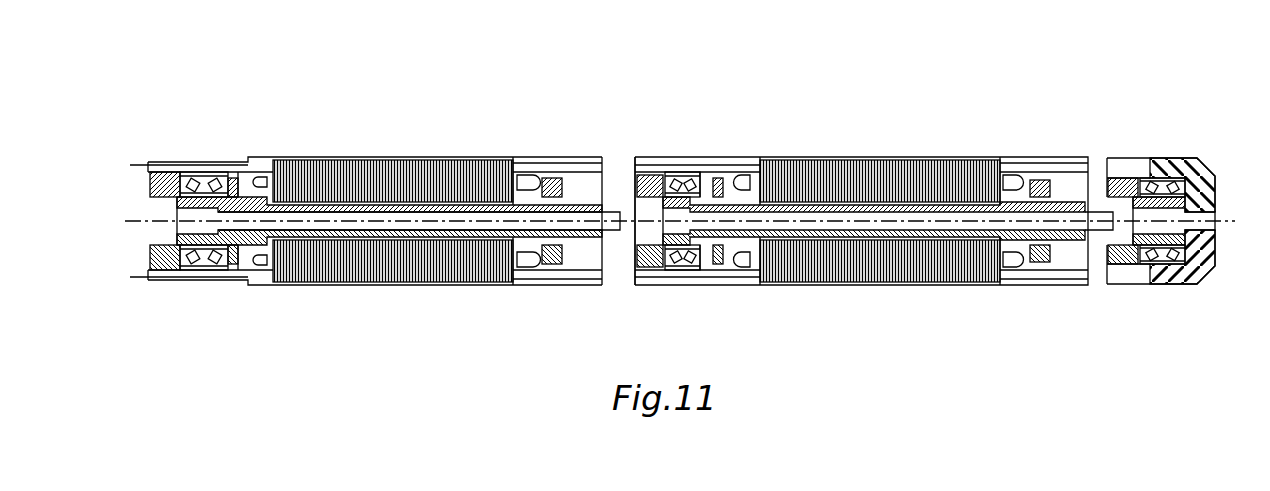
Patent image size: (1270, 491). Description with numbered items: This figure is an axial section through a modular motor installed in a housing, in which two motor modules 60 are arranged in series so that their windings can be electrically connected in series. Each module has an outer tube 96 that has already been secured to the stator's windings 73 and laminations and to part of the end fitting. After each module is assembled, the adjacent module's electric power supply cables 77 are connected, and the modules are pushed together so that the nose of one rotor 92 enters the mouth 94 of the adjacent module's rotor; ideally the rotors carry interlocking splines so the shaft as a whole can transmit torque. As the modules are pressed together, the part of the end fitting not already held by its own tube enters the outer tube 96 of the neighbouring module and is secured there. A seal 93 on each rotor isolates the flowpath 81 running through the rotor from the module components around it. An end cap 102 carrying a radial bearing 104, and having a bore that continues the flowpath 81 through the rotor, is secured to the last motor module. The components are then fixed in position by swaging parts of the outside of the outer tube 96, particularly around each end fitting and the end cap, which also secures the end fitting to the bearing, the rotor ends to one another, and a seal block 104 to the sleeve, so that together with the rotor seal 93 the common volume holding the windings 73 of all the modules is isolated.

The motor module 60 is at (368, 146).
The stator windings 73 is at (247, 158).
The electric power supply cables 77 is at (612, 172).
The flowpath 81 is at (862, 217).
The rotor nose 92 is at (173, 158).
The seal 93 is at (598, 203).
The mouth 94 is at (678, 170).
The outer tube 96 is at (415, 158).
The end cap 102 is at (1178, 166).
The radial bearing 104 is at (700, 172).